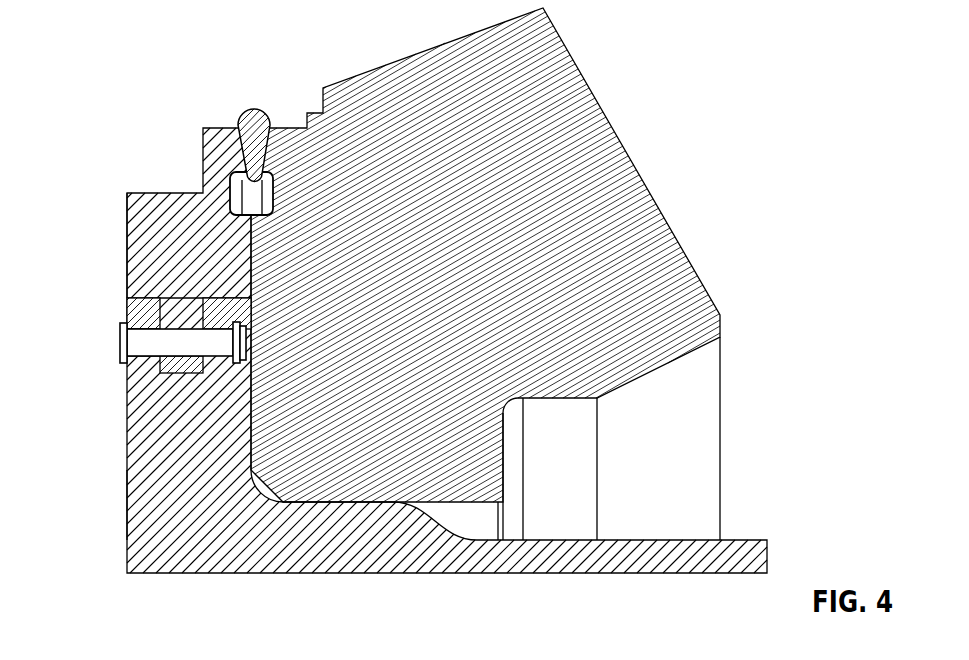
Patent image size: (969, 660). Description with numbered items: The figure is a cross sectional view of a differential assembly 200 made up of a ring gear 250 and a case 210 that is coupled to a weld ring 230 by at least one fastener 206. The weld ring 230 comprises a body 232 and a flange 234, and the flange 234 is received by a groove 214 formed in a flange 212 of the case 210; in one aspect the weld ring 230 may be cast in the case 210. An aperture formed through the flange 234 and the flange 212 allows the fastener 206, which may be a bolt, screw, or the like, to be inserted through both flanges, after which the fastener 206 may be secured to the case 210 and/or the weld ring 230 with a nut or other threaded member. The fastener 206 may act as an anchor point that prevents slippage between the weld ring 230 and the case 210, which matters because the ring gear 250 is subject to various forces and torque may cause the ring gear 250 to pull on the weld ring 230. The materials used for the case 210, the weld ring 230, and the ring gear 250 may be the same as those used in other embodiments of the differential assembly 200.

The differential assembly 200 is at (398, 313).
The fastener 206 is at (130, 343).
The case 210 is at (155, 580).
The flange 212 is at (145, 498).
The groove 214 is at (143, 366).
The weld ring 230 is at (154, 256).
The body 232 is at (150, 208).
The flange 234 is at (185, 316).
The ring gear 250 is at (650, 98).